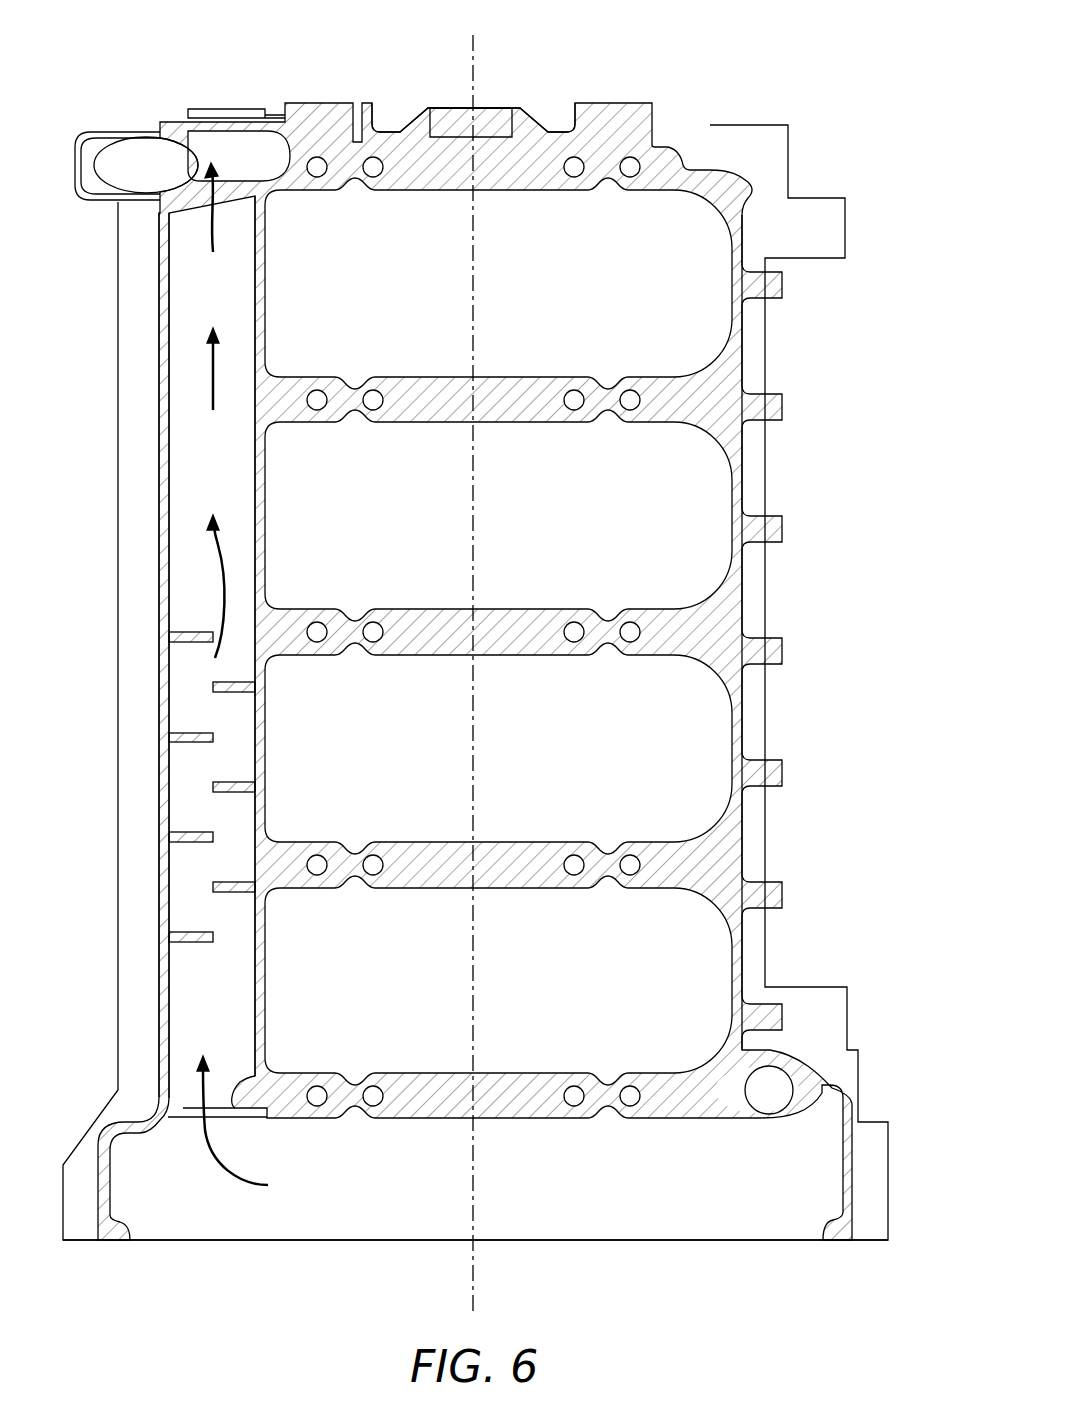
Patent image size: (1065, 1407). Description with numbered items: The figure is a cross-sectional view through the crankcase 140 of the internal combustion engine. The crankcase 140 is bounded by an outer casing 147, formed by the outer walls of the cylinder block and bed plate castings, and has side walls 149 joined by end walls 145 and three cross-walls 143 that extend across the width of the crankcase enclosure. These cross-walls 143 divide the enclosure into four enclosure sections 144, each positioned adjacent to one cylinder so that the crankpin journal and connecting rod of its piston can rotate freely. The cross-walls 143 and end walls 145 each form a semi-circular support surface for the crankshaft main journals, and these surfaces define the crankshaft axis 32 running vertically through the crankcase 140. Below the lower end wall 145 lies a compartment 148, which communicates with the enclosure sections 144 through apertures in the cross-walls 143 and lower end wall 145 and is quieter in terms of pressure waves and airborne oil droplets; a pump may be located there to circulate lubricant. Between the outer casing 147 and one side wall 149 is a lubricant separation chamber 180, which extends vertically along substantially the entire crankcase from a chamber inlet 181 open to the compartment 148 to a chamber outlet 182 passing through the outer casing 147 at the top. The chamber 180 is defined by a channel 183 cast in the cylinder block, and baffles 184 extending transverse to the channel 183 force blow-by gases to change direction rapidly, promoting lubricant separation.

The crankcase 140 is at (748, 60).
The crankshaft axis 32 is at (471, 42).
The end walls 145 is at (545, 157).
The enclosure sections 144 is at (405, 296).
The cross-walls 143 is at (680, 400).
The side walls 149 is at (737, 498).
The outer casing 147 is at (163, 868).
The baffles 184 is at (197, 735).
The chamber outlet 182 is at (207, 157).
The channel 183 is at (195, 457).
The lubricant separation chamber 180 is at (191, 381).
The chamber inlet 181 is at (183, 1108).
The compartment 148 is at (737, 1200).